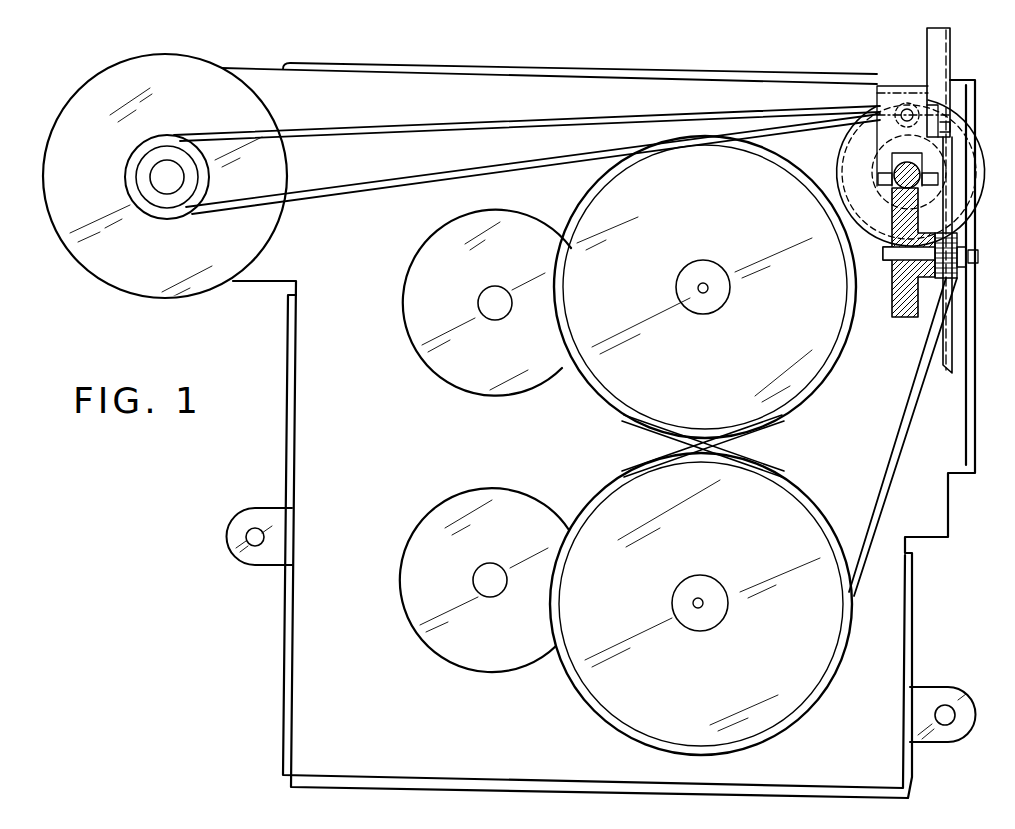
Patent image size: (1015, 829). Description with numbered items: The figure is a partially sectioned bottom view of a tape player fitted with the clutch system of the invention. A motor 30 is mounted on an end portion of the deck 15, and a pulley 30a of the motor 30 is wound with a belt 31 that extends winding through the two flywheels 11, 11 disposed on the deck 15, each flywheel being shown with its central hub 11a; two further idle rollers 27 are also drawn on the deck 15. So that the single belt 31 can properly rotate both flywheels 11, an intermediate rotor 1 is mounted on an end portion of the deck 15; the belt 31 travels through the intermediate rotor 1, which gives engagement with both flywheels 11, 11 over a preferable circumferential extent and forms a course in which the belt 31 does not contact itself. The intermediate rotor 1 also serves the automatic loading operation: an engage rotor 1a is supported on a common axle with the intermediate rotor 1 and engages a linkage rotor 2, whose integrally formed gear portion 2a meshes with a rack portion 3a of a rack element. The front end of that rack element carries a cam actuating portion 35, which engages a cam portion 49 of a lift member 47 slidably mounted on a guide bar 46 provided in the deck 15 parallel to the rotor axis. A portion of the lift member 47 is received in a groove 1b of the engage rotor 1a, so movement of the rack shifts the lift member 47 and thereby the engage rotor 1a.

The intermediate rotor 1 is at (963, 177).
The engage rotor 1a is at (930, 197).
The groove 1b is at (918, 168).
The linkage rotor 2 is at (915, 293).
The gear portion 2a is at (945, 268).
The rack portion 3a is at (950, 226).
The flywheel 11 is at (577, 238).
The reel shaft 11a is at (708, 290).
The deck 15 is at (873, 763).
The guide roller 27 is at (405, 313).
The motor 30 is at (142, 285).
The pulley 30a is at (170, 205).
The belt 31 is at (772, 110).
The cam actuating portion 35 is at (942, 67).
The guide bar 46 is at (860, 127).
The lift member 47 is at (888, 100).
The cam portion 49 is at (950, 127).